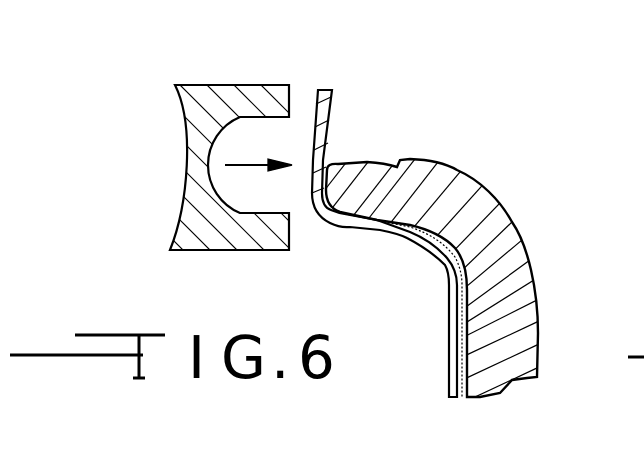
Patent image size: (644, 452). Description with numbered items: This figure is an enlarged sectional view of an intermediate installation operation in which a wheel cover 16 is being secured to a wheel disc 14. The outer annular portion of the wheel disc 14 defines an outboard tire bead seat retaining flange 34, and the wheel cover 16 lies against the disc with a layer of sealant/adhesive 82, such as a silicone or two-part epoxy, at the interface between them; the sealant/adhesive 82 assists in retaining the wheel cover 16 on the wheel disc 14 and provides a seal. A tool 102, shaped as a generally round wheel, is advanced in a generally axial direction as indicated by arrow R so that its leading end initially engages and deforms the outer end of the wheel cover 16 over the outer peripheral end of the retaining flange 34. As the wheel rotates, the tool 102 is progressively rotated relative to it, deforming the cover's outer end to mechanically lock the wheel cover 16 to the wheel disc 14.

The tool 102 is at (233, 100).
The arrow R is at (243, 166).
The wheel disc 14 is at (457, 256).
The outboard tire bead seat retaining flange 34 is at (513, 220).
The wheel cover 16 is at (430, 322).
The sealant/adhesive 82 is at (462, 398).